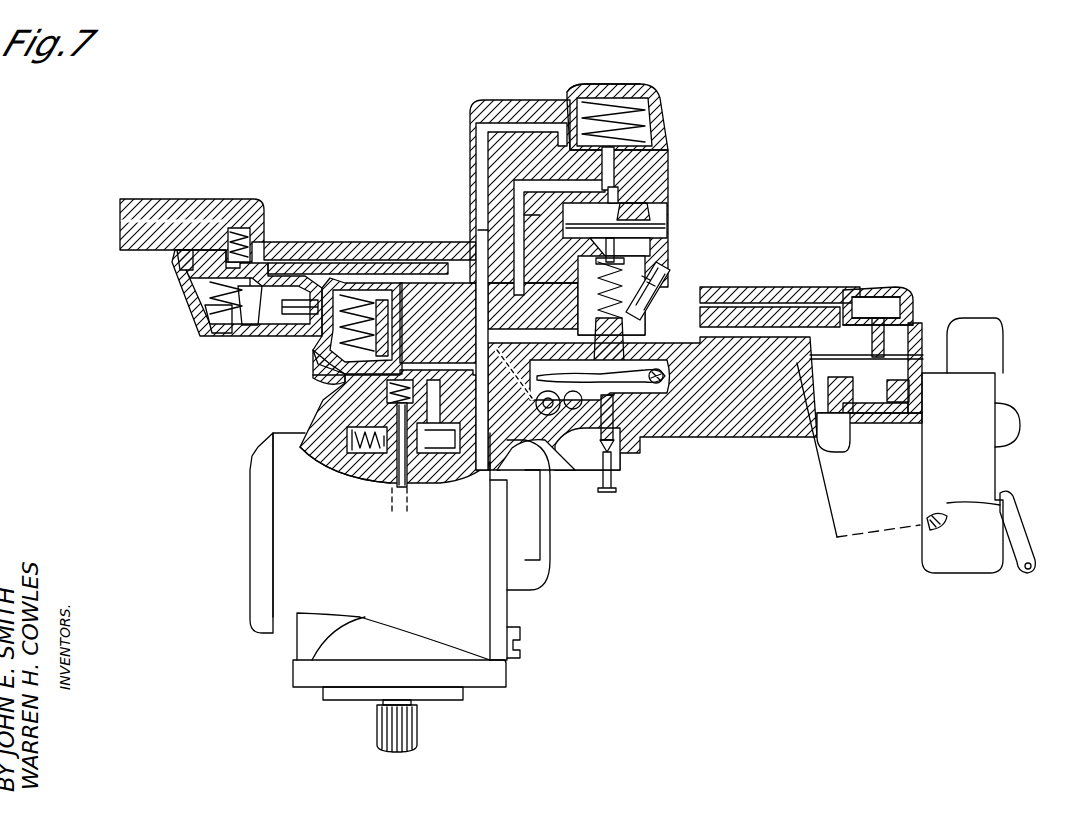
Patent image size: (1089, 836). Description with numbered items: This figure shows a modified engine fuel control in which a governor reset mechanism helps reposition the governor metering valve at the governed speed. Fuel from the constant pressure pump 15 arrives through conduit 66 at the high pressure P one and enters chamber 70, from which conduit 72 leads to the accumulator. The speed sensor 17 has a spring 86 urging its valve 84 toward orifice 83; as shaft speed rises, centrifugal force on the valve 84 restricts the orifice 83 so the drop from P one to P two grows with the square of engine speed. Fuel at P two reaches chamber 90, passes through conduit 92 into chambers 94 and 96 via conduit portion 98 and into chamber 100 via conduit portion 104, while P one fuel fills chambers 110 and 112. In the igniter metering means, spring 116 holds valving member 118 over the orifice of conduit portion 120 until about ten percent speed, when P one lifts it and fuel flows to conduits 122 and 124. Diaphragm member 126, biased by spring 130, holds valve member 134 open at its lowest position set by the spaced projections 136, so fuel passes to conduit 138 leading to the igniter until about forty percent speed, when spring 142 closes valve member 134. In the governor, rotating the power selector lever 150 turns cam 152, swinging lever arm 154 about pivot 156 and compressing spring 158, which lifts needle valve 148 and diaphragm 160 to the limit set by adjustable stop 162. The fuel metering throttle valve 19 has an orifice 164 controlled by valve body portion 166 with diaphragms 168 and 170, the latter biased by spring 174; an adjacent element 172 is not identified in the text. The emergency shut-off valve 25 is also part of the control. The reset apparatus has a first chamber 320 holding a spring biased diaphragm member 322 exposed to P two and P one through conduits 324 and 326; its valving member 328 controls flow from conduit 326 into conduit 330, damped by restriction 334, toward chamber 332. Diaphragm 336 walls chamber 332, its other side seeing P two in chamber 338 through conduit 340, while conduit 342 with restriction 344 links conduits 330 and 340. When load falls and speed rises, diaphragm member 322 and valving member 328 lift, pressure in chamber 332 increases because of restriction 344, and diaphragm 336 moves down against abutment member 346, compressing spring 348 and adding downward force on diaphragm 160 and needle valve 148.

The constant pressure pump 15 is at (512, 613).
The speed sensor 17 is at (440, 455).
The fuel metering throttle valve 19 is at (870, 287).
The emergency shut-off valve 25 is at (920, 485).
The conduit 66 is at (480, 462).
The chamber 70 is at (345, 420).
The conduit 72 is at (335, 457).
The orifice 83 is at (396, 490).
The valve 84 is at (409, 492).
The spring 86 is at (370, 455).
The chamber 90 is at (595, 340).
The conduit 92 is at (375, 357).
The chamber 94 is at (198, 338).
The chamber 96 is at (340, 365).
The conduit portion 98 is at (262, 334).
The chamber 100 is at (898, 300).
The conduit portion 104 is at (745, 323).
The chamber 110 is at (853, 300).
The chamber 112 is at (393, 283).
The spring 116 is at (318, 368).
The valving member 118 is at (295, 330).
The conduit portion 120 is at (356, 288).
The conduit 122 is at (298, 250).
The conduit 124 is at (598, 466).
The diaphragm member 126 is at (188, 291).
The spring 130 is at (196, 320).
The valve member 134 is at (272, 265).
The spaced projections 136 is at (180, 262).
The conduit 138 is at (160, 206).
The spring 142 is at (245, 235).
The needle valve 148 is at (625, 450).
The power selector lever 150 is at (1025, 556).
The cam 152 is at (536, 406).
The lever arm 154 is at (512, 370).
The pivot 156 is at (655, 378).
The spring 158 is at (660, 368).
The diaphragm 160 is at (555, 312).
The adjustable stop 162 is at (662, 290).
The orifice 164 is at (848, 426).
The valve body portion 166 is at (886, 322).
The diaphragm 168 is at (890, 294).
The diaphragm 170 is at (916, 355).
The lower plate 172 is at (905, 410).
The spring 174 is at (900, 385).
The first chamber 320 is at (640, 125).
The diaphragm member 322 is at (665, 140).
The conduit 324 is at (478, 140).
The conduit 326 is at (545, 166).
The valving member 328 is at (588, 96).
The conduit 330 is at (616, 170).
The chamber 332 is at (650, 210).
The restriction 334 is at (620, 195).
The diaphragm 336 is at (665, 226).
The chamber 338 is at (650, 240).
The conduit 340 is at (478, 230).
The conduit 342 is at (528, 192).
The restriction 344 is at (522, 215).
The abutment member 346 is at (598, 266).
The spring 348 is at (580, 282).